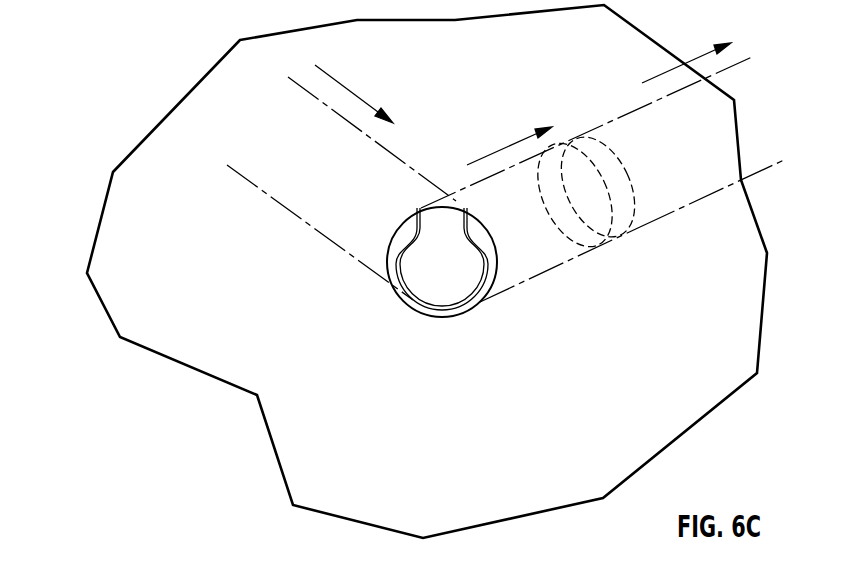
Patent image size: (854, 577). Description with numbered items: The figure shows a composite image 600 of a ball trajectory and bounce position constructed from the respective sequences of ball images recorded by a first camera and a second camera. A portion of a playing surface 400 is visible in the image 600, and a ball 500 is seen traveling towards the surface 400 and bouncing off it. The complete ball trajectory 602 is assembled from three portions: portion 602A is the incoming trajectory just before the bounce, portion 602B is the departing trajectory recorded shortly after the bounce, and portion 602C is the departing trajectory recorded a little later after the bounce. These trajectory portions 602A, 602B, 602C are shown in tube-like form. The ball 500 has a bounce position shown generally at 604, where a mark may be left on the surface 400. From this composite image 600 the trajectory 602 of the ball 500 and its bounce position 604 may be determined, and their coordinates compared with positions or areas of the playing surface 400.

The playing surface 400 is at (567, 363).
The ball 500 is at (425, 243).
The image 600 is at (237, 31).
The ball trajectory 602 is at (398, 142).
The ball trajectory portion 602A is at (373, 273).
The ball trajectory portion 602B is at (558, 264).
The ball trajectory portion 602C is at (667, 214).
The bounce position 604 is at (443, 318).